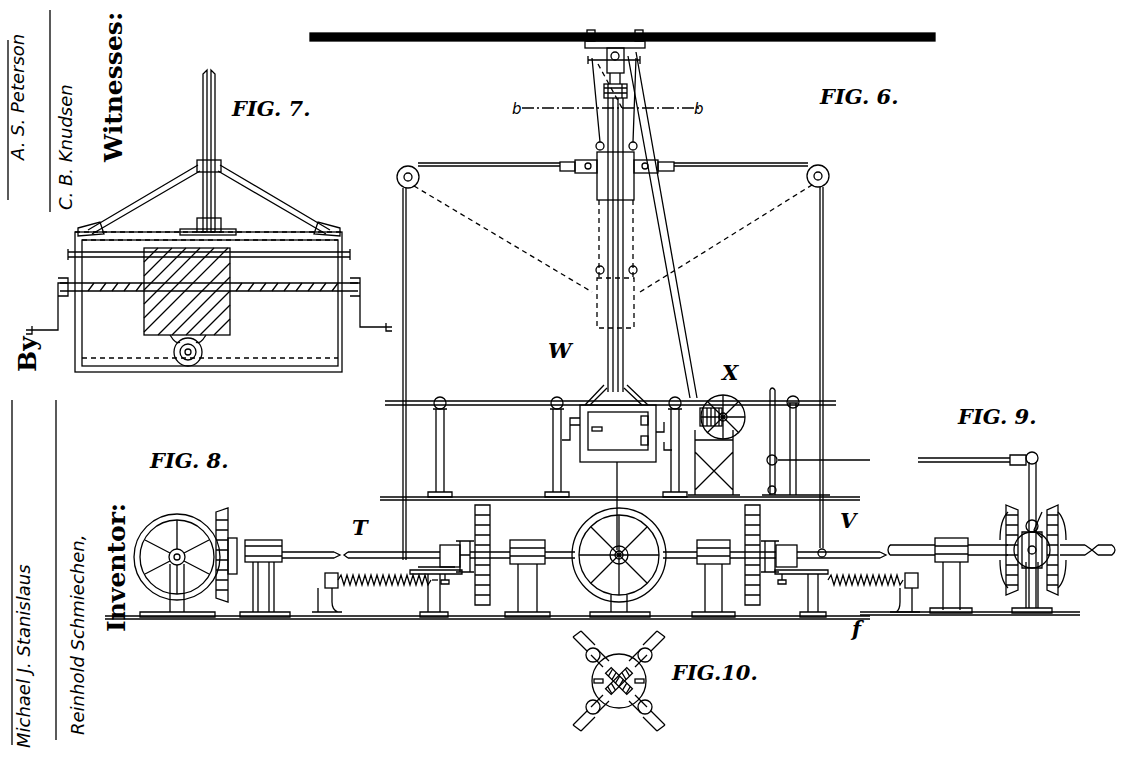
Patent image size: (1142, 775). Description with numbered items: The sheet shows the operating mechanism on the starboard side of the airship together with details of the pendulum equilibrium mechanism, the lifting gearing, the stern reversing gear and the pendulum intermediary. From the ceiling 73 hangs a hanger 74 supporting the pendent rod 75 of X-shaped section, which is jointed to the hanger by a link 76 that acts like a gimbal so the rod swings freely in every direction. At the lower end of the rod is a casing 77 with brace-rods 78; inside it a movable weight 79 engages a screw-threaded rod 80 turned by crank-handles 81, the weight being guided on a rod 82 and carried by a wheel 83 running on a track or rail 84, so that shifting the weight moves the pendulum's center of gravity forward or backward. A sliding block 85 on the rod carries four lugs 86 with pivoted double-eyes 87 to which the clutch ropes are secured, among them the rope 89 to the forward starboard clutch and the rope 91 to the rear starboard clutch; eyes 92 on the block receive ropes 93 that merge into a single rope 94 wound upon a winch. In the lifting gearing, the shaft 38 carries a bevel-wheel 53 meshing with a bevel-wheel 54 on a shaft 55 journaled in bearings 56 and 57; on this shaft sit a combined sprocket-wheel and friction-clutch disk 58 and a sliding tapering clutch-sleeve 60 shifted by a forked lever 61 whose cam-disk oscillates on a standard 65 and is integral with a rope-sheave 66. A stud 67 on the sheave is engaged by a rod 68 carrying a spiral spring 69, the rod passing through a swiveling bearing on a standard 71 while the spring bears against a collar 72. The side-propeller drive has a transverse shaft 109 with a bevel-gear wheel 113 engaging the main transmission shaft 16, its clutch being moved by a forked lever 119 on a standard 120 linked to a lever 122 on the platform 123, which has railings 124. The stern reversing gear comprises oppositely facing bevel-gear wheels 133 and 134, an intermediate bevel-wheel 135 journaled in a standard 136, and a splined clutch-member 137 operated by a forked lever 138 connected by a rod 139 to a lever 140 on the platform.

In FIG. 8, the main power transmission shaft 16 is at (618, 555).
In FIG. 9, the main power transmission shaft 16 is at (902, 545).
In FIG. 8, the shaft 38 is at (178, 550).
In FIG. 8, the bevel-wheel 53 is at (154, 516).
In FIG. 8, the bevel-wheel 54 is at (232, 523).
In FIG. 8, the shaft 55 is at (330, 549).
In FIG. 8, the bearing 56 is at (262, 540).
In FIG. 9, the bearing 56 is at (952, 538).
In FIG. 8, the bearing 57 is at (524, 540).
In FIG. 8, the combined sprocket-wheel and friction-clutch disk 58 is at (490, 522).
In FIG. 8, the sliding tapering clutch-sleeve 60 is at (444, 546).
In FIG. 8, the forked lever 61 is at (462, 540).
In FIG. 8, the standard 65 is at (426, 597).
In FIG. 8, the rope-sheave 66 is at (410, 572).
In FIG. 8, the stud 67 is at (449, 584).
In FIG. 8, the rod 68 is at (325, 580).
In FIG. 8, the spiral spring 69 is at (380, 586).
In FIG. 8, the standard 71 is at (320, 618).
In FIG. 8, the collar 72 is at (438, 619).
In FIG. 6, the ceiling 73 is at (622, 26).
In FIG. 6, the hanger 74 is at (616, 44).
In FIG. 7, the pendent rod 75 is at (217, 133).
In FIG. 6, the pendent rod 75 is at (626, 350).
In FIG. 10, the pendent rod 75 is at (608, 676).
In FIG. 6, the link 76 is at (624, 72).
In FIG. 7, the casing 77 is at (282, 372).
In FIG. 6, the casing 77 is at (618, 433).
In FIG. 7, the brace-rods 78 is at (150, 198).
In FIG. 6, the brace-rods 78 is at (600, 388).
In FIG. 7, the movable weight 79 is at (144, 320).
In FIG. 7, the screw-threaded rod 80 is at (265, 295).
In FIG. 7, the crank-handles 81 is at (50, 315).
In FIG. 6, the crank-handles 81 is at (568, 440).
In FIG. 7, the rod 82 is at (272, 257).
In FIG. 7, the wheel 83 is at (202, 348).
In FIG. 7, the track or rail 84 is at (128, 348).
In FIG. 6, the sliding block 85 is at (597, 190).
In FIG. 10, the sliding block 85 is at (619, 708).
In FIG. 6, the lugs 86 is at (580, 160).
In FIG. 10, the lugs 86 is at (606, 660).
In FIG. 6, the double-eyes 87 is at (572, 172).
In FIG. 10, the double-eyes 87 is at (576, 648).
In FIG. 6, the rope 89 is at (407, 330).
In FIG. 6, the rope 91 is at (720, 246).
In FIG. 6, the eyes 92 is at (597, 143).
In FIG. 10, the eyes 92 is at (590, 682).
In FIG. 6, the ropes 93 is at (658, 224).
In FIG. 6, the rope 94 is at (688, 332).
In FIG. 8, the transverse shaft 109 is at (610, 560).
In FIG. 8, the bevel-gear wheel 113 is at (640, 530).
In FIG. 6, the forked lever 119 is at (612, 502).
In FIG. 8, the standard 120 is at (642, 606).
In FIG. 6, the lever 122 is at (622, 478).
In FIG. 6, the platform 123 is at (508, 497).
In FIG. 6, the railings 124 is at (490, 401).
In FIG. 9, the bevel-gear wheel 133 is at (1058, 522).
In FIG. 9, the bevel-gear wheel 134 is at (1004, 522).
In FIG. 9, the intermediate bevel-wheel 135 is at (1046, 514).
In FIG. 9, the standard 136 is at (1034, 613).
In FIG. 9, the splined clutch-member 137 is at (1050, 550).
In FIG. 9, the forked lever 138 is at (1029, 485).
In FIG. 9, the rod 139 is at (978, 451).
In FIG. 6, the lever 140 is at (778, 422).